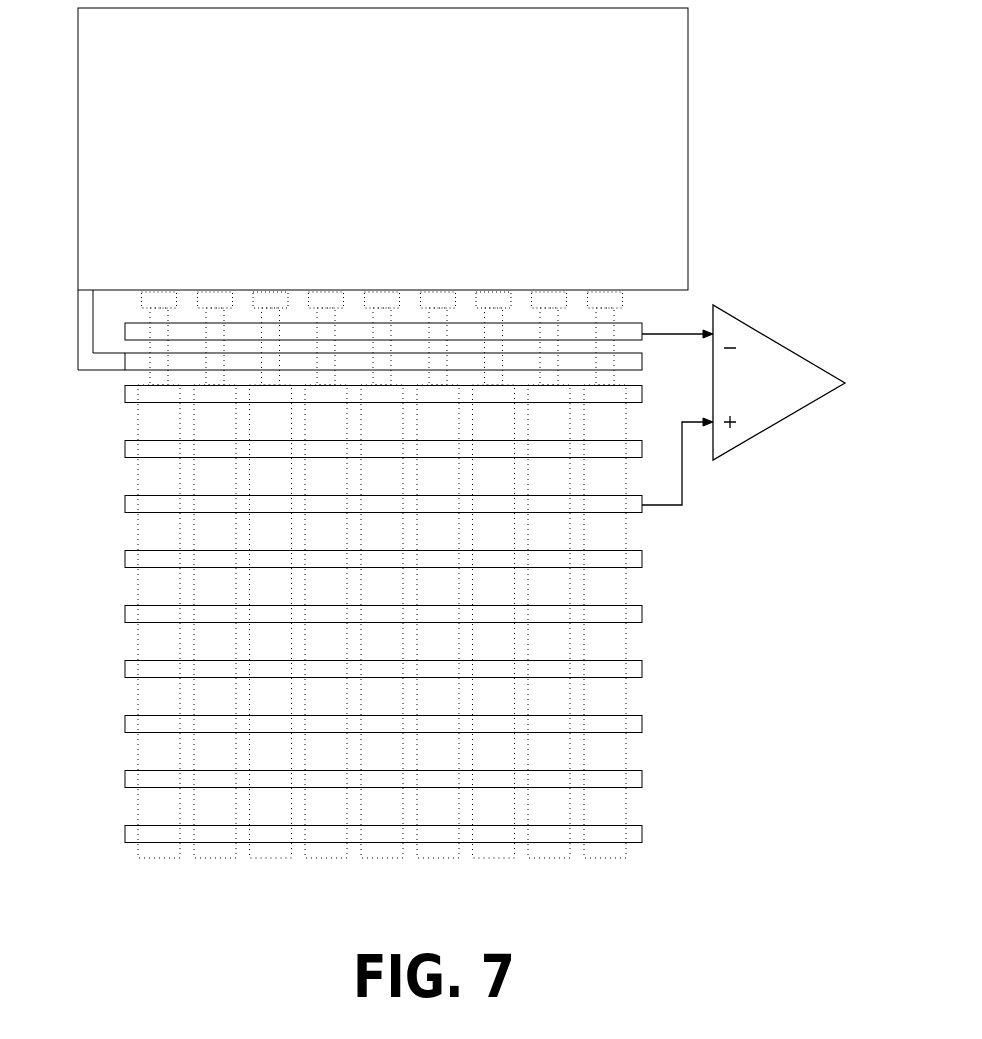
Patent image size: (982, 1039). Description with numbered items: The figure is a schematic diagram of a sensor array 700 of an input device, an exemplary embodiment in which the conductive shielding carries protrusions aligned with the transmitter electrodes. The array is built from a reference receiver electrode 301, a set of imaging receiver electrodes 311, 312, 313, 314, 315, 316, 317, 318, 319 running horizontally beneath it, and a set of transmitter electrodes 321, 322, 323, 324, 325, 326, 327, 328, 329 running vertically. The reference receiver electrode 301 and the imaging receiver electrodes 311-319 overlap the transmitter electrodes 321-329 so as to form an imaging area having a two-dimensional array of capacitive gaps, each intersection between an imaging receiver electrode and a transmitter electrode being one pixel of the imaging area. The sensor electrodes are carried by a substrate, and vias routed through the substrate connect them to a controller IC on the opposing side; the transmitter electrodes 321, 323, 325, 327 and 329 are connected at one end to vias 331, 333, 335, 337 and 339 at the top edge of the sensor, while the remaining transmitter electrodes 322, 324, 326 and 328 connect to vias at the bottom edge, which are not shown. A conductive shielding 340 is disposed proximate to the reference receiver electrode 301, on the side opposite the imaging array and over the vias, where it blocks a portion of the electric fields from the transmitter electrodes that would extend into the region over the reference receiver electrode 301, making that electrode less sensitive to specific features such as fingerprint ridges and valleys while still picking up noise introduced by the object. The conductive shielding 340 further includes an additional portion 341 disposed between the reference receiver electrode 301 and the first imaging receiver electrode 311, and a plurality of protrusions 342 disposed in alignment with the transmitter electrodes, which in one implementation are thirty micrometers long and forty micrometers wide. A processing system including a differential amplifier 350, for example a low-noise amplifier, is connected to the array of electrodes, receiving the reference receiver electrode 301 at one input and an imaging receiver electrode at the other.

The reference receiver electrode 301 is at (125, 325).
The imaging receiver electrode 311 is at (125, 390).
The imaging receiver electrode 312 is at (125, 445).
The imaging receiver electrode 313 is at (125, 500).
The imaging receiver electrode 314 is at (125, 555).
The imaging receiver electrode 315 is at (125, 610).
The imaging receiver electrode 316 is at (125, 665).
The imaging receiver electrode 317 is at (125, 720).
The imaging receiver electrode 318 is at (125, 775).
The imaging receiver electrode 319 is at (125, 830).
The transmitter electrode 321 is at (159, 858).
The transmitter electrode 322 is at (215, 858).
The transmitter electrode 323 is at (270, 858).
The transmitter electrode 324 is at (326, 858).
The transmitter electrode 325 is at (382, 858).
The transmitter electrode 326 is at (438, 858).
The transmitter electrode 327 is at (494, 858).
The transmitter electrode 328 is at (549, 858).
The transmitter electrode 329 is at (605, 858).
The via 331 is at (187, 42).
The via 333 is at (247, 167).
The via 335 is at (407, 42).
The via 337 is at (467, 165).
The via 339 is at (555, 53).
The conductive shielding 340 is at (690, 40).
The additional portion 341 is at (78, 364).
The protrusions 342 is at (165, 292).
The differential amplifier 350 is at (763, 430).
The sensor array 700 is at (698, 867).